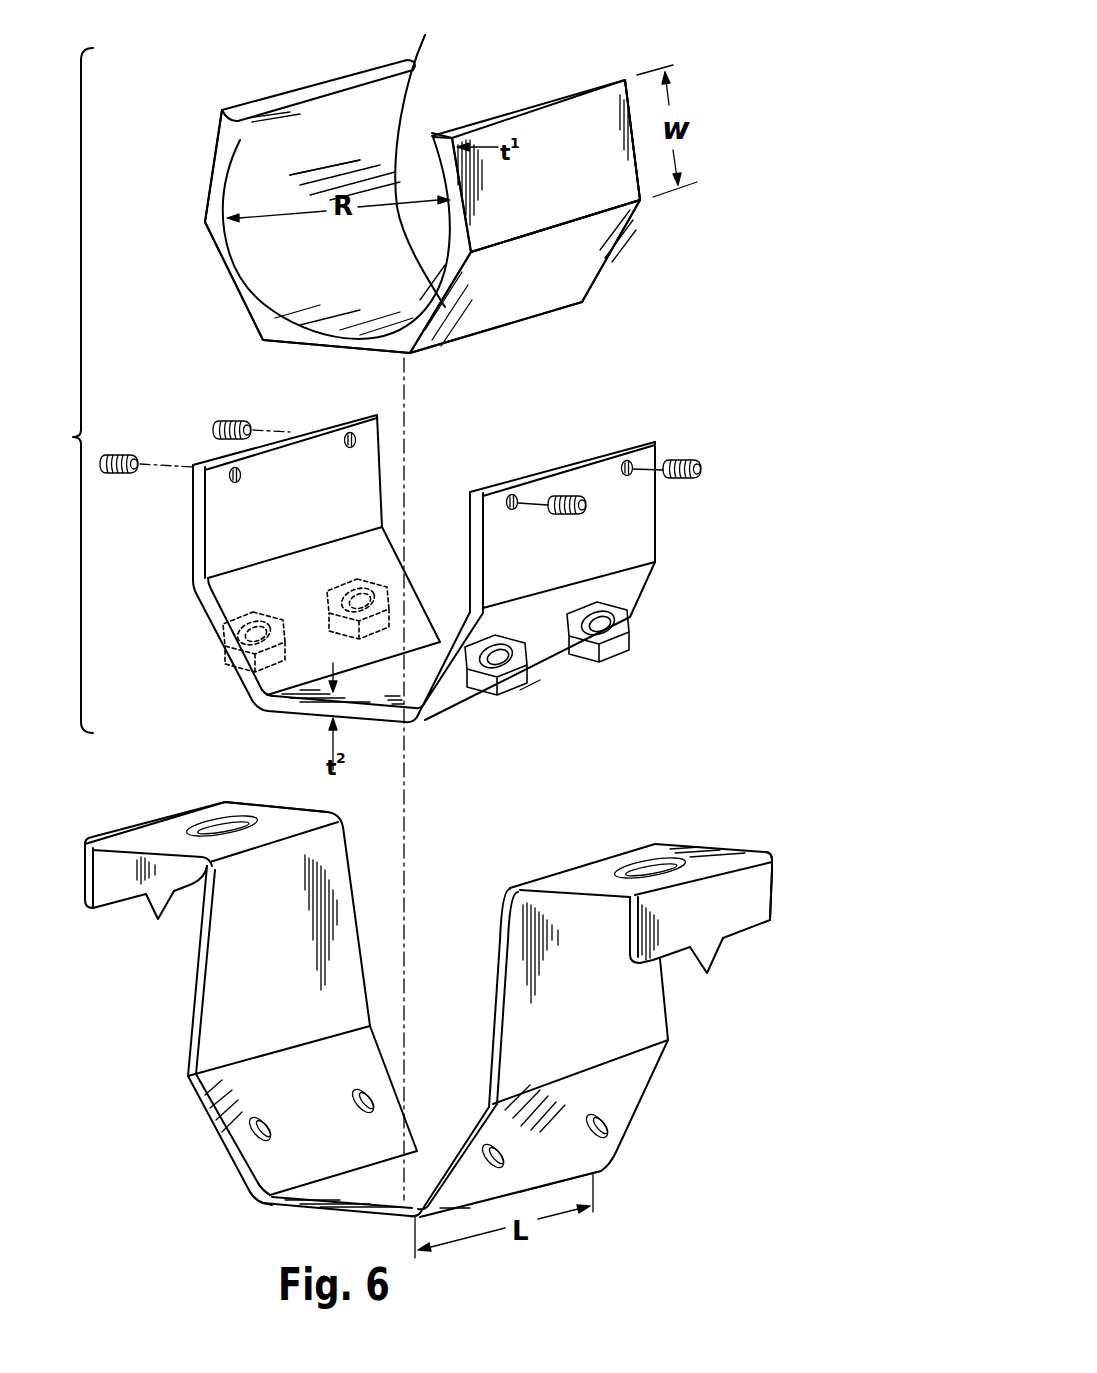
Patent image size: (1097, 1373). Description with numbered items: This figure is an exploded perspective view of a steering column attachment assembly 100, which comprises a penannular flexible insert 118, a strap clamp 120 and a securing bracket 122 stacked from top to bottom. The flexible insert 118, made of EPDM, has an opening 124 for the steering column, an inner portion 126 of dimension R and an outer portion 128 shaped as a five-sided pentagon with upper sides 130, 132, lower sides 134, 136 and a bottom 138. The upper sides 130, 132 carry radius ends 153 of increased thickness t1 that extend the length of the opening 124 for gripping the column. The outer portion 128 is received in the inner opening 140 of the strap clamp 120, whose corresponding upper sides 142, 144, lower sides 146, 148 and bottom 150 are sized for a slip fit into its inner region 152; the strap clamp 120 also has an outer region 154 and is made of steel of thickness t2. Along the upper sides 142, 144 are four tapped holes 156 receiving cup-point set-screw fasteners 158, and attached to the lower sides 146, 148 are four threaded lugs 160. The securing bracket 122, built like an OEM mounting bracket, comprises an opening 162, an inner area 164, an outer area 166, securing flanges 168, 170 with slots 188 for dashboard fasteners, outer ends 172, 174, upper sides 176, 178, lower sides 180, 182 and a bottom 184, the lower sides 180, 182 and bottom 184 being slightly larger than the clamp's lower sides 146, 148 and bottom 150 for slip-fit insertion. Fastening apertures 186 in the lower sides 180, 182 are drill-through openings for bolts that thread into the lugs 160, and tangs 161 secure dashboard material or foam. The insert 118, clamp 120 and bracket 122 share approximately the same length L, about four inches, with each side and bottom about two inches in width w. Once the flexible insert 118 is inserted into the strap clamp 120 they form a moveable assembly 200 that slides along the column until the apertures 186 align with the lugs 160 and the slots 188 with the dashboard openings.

The steering column attachment assembly 100 is at (728, 97).
The penannular flexible insert 118 is at (640, 200).
The strap clamp 120 is at (653, 523).
The securing bracket 122 is at (772, 884).
The opening 124 is at (493, 83).
The inner portion 126 is at (258, 185).
The outer portion 128 is at (513, 290).
The upper side 130 is at (590, 117).
The upper side 132 is at (222, 117).
The lower side 134 is at (582, 258).
The lower side 136 is at (220, 248).
The bottom 138 is at (357, 342).
The inner opening 140 is at (503, 435).
The upper side 142 is at (597, 540).
The upper side 144 is at (193, 505).
The lower side 146 is at (545, 650).
The lower side 148 is at (210, 600).
The bottom 150 is at (368, 720).
The inner region 152 is at (313, 600).
The radius ends 153 is at (424, 58).
The outer region 154 is at (530, 680).
The tapped holes 156 is at (627, 460).
The fasteners 158 is at (235, 424).
The lugs 160 is at (240, 675).
The tangs 161 is at (160, 921).
The opening 162 is at (476, 866).
The inner area 164 is at (277, 1001).
The outer area 166 is at (627, 1137).
The securing flange 168 is at (206, 795).
The securing flange 170 is at (728, 845).
The outer end 172 is at (750, 922).
The outer end 174 is at (103, 898).
The upper side 176 is at (616, 1022).
The upper side 178 is at (224, 1026).
The lower side 180 is at (634, 1083).
The lower side 182 is at (258, 1185).
The bottom 184 is at (335, 1201).
The fastening apertures 186 is at (372, 1097).
The slots 188 is at (206, 826).
The moveable assembly 200 is at (60, 390).